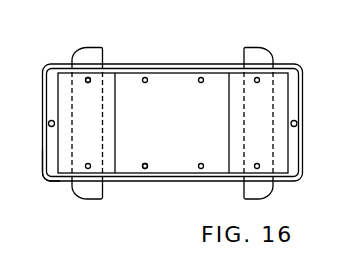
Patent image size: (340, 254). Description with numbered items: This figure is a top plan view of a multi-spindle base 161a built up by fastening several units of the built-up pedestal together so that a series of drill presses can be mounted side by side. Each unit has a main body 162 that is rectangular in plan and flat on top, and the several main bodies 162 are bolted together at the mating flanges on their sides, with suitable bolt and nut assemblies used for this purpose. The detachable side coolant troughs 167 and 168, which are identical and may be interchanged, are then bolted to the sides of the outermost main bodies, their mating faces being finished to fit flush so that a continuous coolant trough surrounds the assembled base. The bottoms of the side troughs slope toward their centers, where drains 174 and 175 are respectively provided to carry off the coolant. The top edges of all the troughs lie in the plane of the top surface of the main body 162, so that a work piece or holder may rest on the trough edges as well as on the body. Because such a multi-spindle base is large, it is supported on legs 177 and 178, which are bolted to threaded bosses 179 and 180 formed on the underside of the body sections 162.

The multi-spindle base 161a is at (230, 182).
The main body 162 is at (108, 80).
The side coolant trough 167 is at (46, 168).
The side coolant trough 168 is at (302, 156).
The drain 174 is at (49, 125).
The drain 175 is at (297, 123).
The leg 177 is at (97, 46).
The leg 178 is at (268, 51).
The threaded boss 179 is at (145, 169).
The threaded boss 180 is at (86, 78).